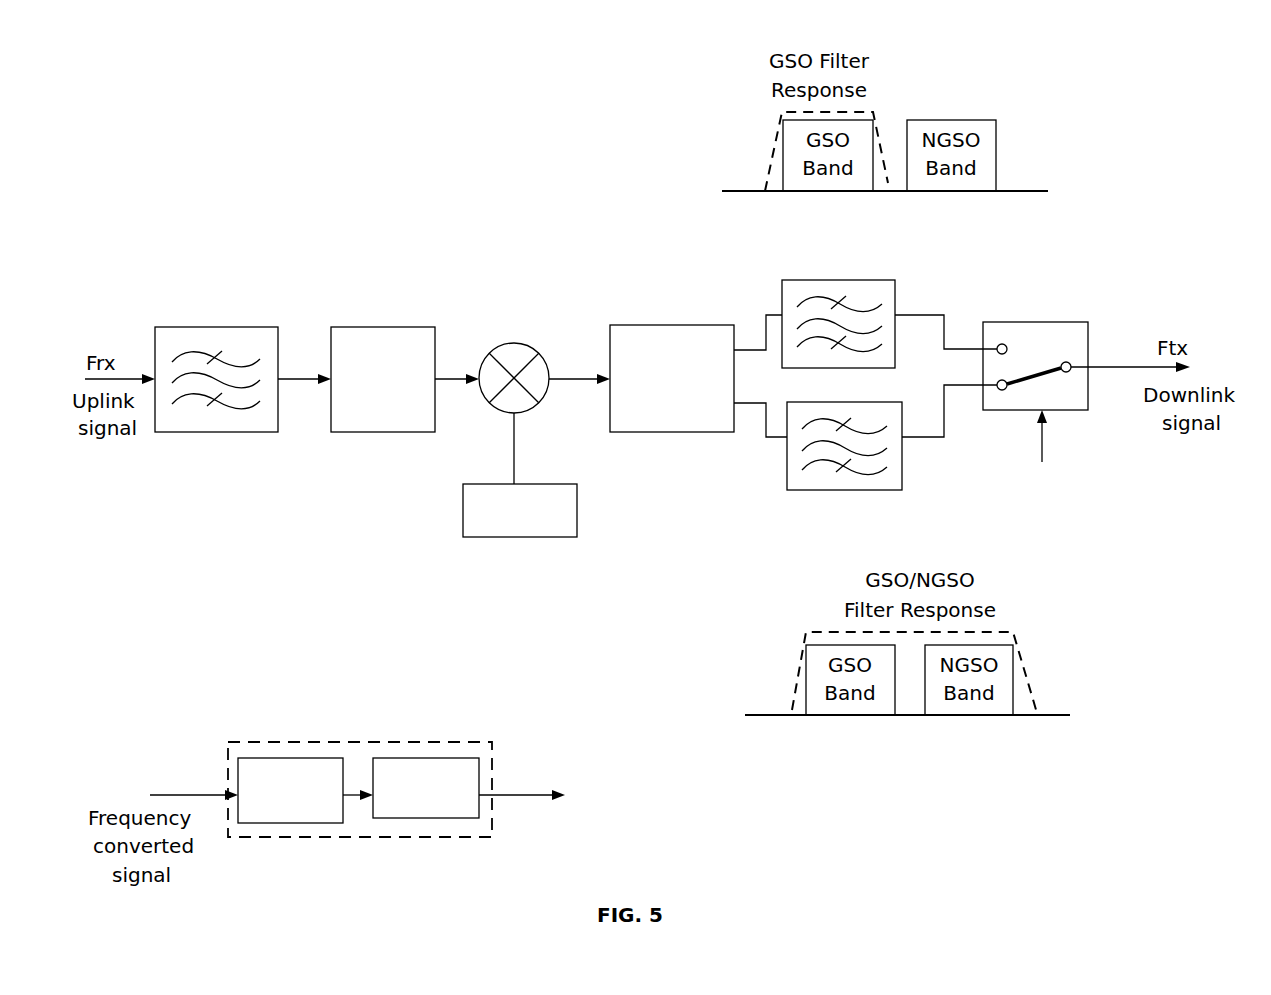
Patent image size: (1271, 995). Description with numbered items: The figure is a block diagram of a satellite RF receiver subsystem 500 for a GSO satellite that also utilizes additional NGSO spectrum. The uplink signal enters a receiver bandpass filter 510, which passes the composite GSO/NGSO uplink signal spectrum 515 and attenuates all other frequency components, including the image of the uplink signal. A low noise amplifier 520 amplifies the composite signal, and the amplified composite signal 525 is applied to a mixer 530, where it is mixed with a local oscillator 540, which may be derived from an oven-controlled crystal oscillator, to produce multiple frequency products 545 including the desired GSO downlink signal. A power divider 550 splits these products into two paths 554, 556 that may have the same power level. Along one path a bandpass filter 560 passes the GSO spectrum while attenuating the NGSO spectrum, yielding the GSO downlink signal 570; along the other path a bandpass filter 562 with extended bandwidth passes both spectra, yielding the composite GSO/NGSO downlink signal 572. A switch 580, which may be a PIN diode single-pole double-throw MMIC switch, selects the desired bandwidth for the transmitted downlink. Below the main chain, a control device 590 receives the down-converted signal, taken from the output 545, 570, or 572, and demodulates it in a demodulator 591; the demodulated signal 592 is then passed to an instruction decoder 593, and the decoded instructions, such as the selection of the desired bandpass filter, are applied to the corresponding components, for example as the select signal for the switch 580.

The satellite RF receiver subsystem 500 is at (462, 176).
The receiver bandpass filter 510 is at (241, 348).
The composite GSO/NGSO uplink signal spectrum 515 is at (295, 383).
The low noise amplifier 520 is at (388, 418).
The amplified composite signal 525 is at (453, 383).
The mixer 530 is at (517, 357).
The local oscillator 540 is at (558, 507).
The multiple frequency products 545 is at (565, 380).
The power divider 550 is at (680, 342).
The first path 554 is at (770, 317).
The second path 556 is at (778, 440).
The bandpass filter 560 is at (847, 295).
The bandpass filter 562 is at (857, 480).
The GSO downlink signal 570 is at (928, 310).
The composite GSO/NGSO downlink signal 572 is at (928, 437).
The switch 580 is at (1049, 348).
The control device 590 is at (396, 800).
The demodulator 591 is at (300, 810).
The demodulated signal 592 is at (350, 798).
The instruction decoder 593 is at (448, 813).